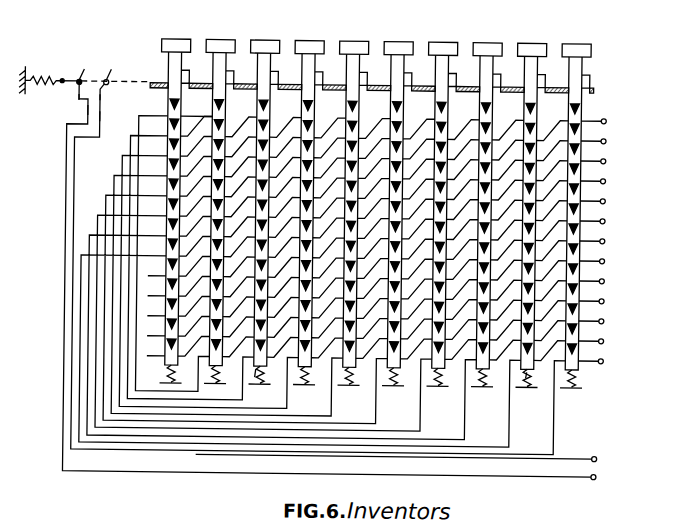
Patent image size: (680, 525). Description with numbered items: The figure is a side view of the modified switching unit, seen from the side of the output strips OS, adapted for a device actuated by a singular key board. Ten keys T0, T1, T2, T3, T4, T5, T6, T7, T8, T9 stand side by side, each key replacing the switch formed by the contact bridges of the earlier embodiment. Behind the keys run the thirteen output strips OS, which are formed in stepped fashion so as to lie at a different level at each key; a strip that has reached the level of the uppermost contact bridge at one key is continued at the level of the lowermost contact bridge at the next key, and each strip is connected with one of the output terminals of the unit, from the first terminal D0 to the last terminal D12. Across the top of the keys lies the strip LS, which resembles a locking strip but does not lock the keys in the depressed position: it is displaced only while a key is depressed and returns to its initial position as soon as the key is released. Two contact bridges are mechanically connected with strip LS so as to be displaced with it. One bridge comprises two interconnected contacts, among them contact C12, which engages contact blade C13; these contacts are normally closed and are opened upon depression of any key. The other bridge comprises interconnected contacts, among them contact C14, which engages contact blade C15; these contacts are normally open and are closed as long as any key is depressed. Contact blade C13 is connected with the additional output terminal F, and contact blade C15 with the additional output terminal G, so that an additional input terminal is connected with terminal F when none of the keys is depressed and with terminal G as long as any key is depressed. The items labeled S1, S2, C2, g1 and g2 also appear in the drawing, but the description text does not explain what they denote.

The key T0 is at (169, 39).
The key T1 is at (214, 39).
The key T2 is at (258, 39).
The key T3 is at (302, 39).
The key T4 is at (347, 39).
The key T5 is at (392, 39).
The key T6 is at (436, 39).
The key T7 is at (480, 39).
The key T8 is at (525, 39).
The key T9 is at (570, 39).
The output strips OS is at (199, 107).
The strip LS is at (594, 88).
The output terminal D0 is at (610, 106).
The output terminal D12 is at (604, 359).
The additional output terminal F is at (600, 453).
The additional output terminal G is at (598, 482).
The spring contact S1 is at (276, 388).
The resistor switch element S2 is at (42, 81).
The contact C2 is at (530, 372).
The contact C12 is at (101, 102).
The contact blade C13 is at (101, 119).
The contact C14 is at (79, 102).
The contact blade C15 is at (87, 112).
The contact g1 is at (320, 256).
The contact g2 is at (328, 268).